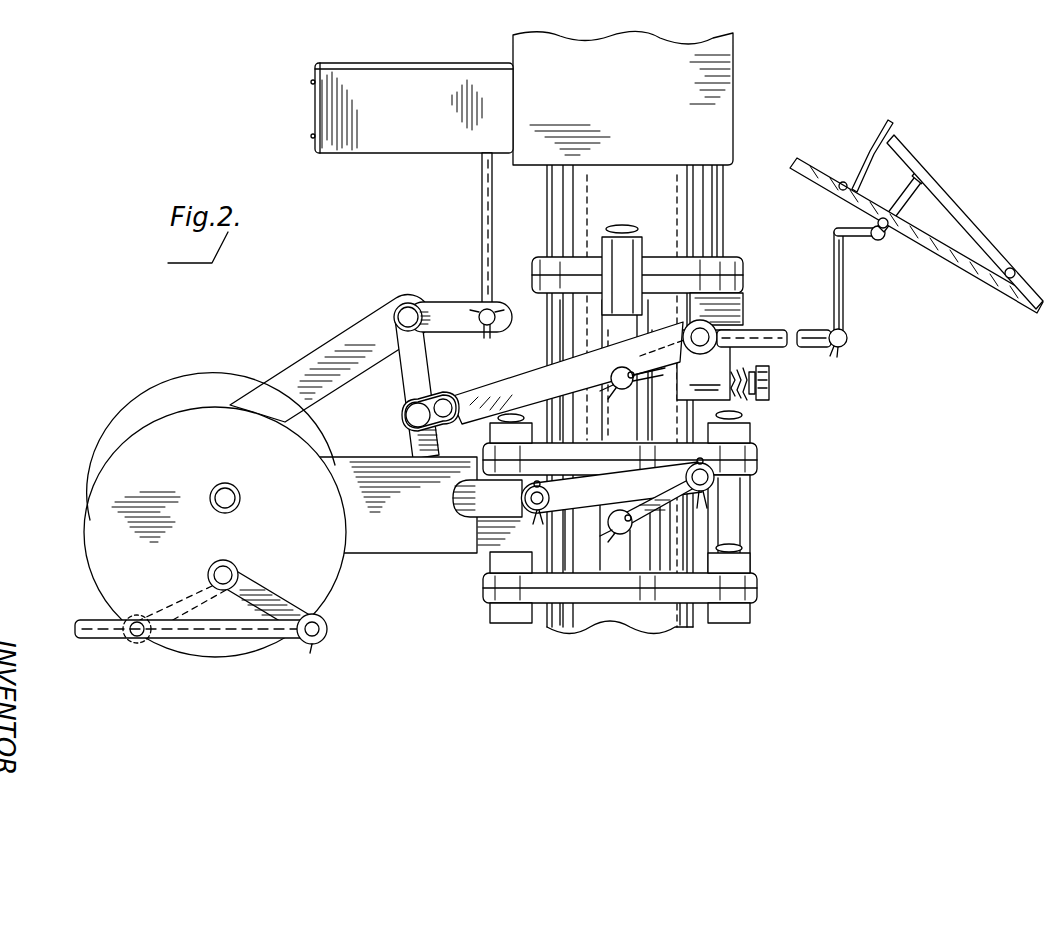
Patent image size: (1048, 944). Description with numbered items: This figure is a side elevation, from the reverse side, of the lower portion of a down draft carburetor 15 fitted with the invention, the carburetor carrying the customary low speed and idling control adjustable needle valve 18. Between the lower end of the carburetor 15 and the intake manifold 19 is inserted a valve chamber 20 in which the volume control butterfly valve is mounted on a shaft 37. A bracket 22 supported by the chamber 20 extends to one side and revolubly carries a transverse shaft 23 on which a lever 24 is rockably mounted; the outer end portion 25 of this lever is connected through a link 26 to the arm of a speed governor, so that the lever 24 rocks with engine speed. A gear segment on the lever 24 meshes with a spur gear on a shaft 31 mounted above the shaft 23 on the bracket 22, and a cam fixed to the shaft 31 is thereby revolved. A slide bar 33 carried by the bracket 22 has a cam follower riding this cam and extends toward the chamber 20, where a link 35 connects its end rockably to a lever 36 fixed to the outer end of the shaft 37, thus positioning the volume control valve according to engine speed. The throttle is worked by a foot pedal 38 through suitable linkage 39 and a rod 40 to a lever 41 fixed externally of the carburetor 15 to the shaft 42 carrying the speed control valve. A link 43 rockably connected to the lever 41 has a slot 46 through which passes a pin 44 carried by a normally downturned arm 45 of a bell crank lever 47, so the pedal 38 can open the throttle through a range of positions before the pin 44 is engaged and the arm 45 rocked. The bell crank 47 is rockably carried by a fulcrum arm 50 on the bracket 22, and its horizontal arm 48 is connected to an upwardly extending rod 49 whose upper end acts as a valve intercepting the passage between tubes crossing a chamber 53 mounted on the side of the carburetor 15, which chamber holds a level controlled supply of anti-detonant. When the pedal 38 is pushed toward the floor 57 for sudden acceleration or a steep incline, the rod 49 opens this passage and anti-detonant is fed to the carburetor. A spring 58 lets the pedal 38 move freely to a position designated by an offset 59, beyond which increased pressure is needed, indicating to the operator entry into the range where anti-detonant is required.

The down draft carburetor 15 is at (720, 221).
The low speed and idling control adjustable needle valve 18 is at (770, 391).
The intake manifold 19 is at (576, 624).
The valve chamber 20 is at (676, 552).
The bracket 22 is at (118, 456).
The shaft 23 is at (216, 572).
The lever 24 is at (268, 592).
The outer end portion 25 is at (326, 630).
The link 26 is at (110, 630).
The shaft 31 is at (222, 490).
The slide bar 33 is at (506, 500).
The link 35 is at (576, 496).
The lever 36 is at (665, 511).
The shaft 37 is at (620, 517).
The foot pedal 38 is at (955, 212).
The linkage 39 is at (834, 268).
The rod 40 is at (806, 333).
The lever 41 is at (633, 388).
The shaft 42 is at (605, 376).
The link 43 is at (522, 380).
The pin 44 is at (412, 416).
The arm 45 is at (413, 366).
The slot 46 is at (446, 400).
The bell crank lever 47 is at (438, 310).
The horizontal arm 48 is at (472, 276).
The rod 49 is at (484, 222).
The fulcrum arm 50 is at (305, 370).
The chamber 53 is at (318, 100).
The floor 57 is at (980, 270).
The spring 58 is at (890, 122).
The offset 59 is at (868, 157).